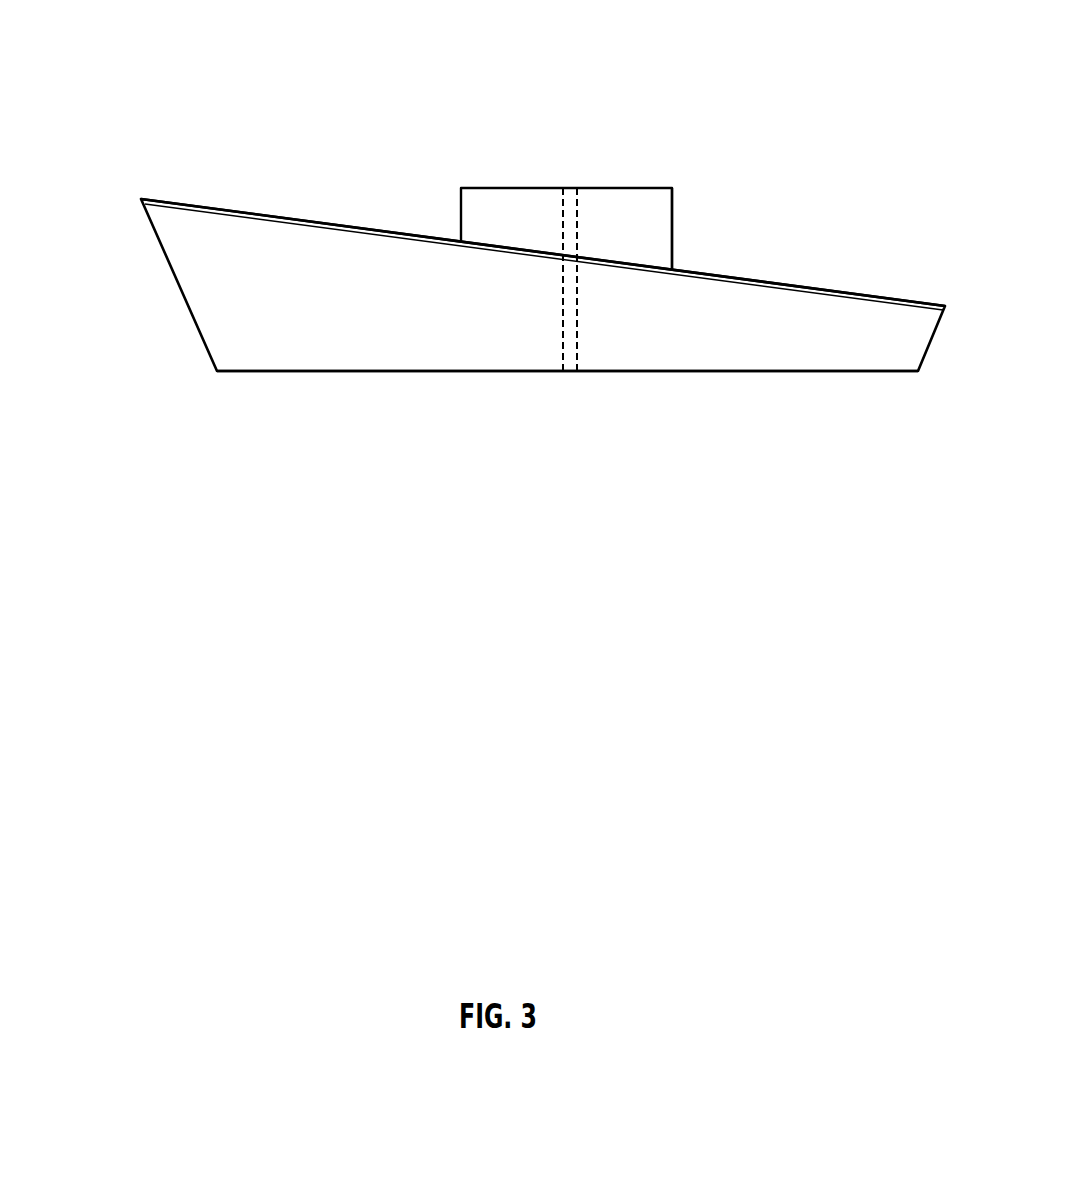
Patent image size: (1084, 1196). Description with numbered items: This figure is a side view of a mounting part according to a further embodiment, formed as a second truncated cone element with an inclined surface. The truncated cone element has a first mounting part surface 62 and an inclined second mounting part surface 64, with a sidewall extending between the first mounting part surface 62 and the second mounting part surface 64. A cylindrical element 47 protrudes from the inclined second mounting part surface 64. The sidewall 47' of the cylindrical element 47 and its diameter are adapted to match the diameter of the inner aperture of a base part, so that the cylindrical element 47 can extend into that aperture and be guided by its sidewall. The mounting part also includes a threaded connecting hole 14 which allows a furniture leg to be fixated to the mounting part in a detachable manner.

The second mounting part surface 64 is at (294, 217).
The first mounting part surface 62 is at (357, 381).
The cylindrical element 47 is at (566, 147).
The sidewall of the cylindrical element 47' is at (723, 188).
The fastener / hidden channel 14 is at (572, 370).